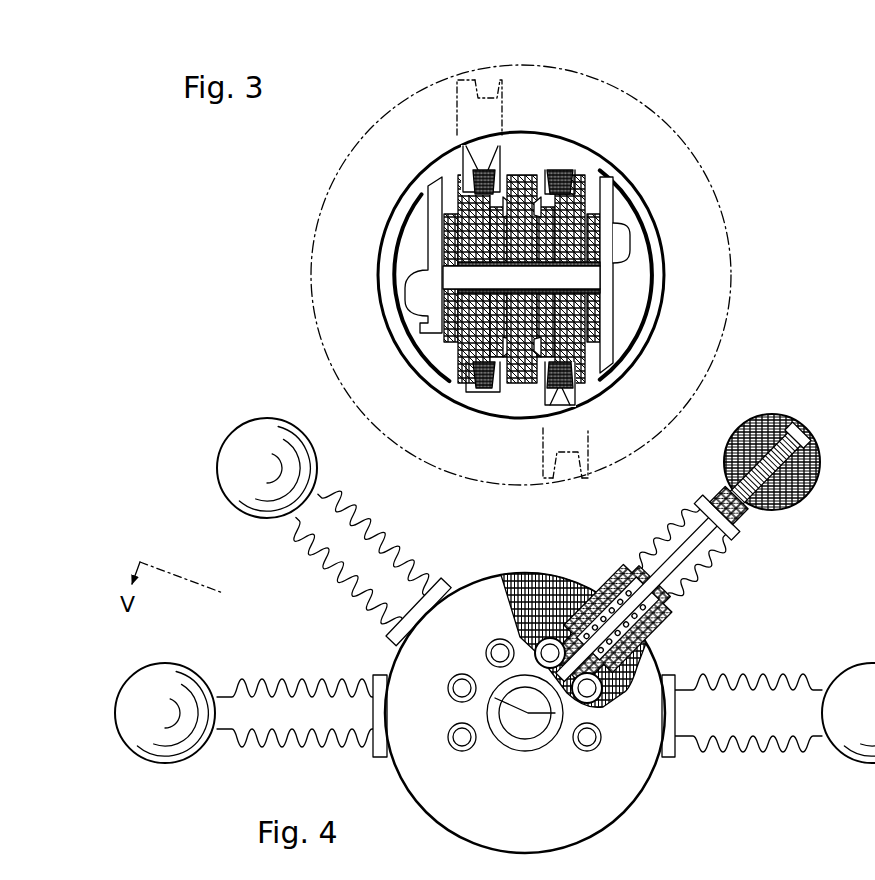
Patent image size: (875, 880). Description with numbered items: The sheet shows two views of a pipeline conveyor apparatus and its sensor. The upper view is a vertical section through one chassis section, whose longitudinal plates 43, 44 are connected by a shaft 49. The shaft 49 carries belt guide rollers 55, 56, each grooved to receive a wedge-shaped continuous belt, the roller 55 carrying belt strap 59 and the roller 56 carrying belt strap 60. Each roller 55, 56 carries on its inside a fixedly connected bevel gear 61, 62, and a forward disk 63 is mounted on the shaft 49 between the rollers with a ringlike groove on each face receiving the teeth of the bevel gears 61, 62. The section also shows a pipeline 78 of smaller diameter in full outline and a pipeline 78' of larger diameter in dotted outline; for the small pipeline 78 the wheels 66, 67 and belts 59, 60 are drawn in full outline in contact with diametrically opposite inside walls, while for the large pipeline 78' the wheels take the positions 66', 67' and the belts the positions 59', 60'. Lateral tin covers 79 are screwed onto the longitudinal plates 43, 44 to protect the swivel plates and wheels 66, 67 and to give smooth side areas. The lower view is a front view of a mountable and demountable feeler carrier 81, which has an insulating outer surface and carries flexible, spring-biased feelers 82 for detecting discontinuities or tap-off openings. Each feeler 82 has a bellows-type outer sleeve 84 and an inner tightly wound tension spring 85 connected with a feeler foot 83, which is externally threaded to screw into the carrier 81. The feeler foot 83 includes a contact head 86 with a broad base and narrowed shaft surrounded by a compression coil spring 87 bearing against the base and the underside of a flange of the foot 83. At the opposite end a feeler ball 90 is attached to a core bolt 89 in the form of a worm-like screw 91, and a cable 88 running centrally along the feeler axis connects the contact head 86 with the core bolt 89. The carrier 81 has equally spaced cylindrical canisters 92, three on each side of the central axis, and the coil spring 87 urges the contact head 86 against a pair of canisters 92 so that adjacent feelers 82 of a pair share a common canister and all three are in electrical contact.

In FIG. 3, the longitudinal plate 43 is at (450, 305).
In FIG. 3, the longitudinal plate 44 is at (595, 253).
In FIG. 3, the shaft 49 is at (473, 277).
In FIG. 3, the belt guide roller 55 is at (470, 201).
In FIG. 3, the belt guide roller 56 is at (593, 193).
In FIG. 3, the belt strap 59 is at (397, 251).
In FIG. 3, the belt strap position for large pipeline 59' is at (426, 84).
In FIG. 3, the belt strap 60 is at (617, 282).
In FIG. 3, the belt strap position for large pipeline 60' is at (583, 487).
In FIG. 3, the bevel gear 61 is at (495, 237).
In FIG. 3, the bevel gear 62 is at (605, 222).
In FIG. 3, the forward disk 63 is at (526, 370).
In FIG. 3, the wheel 66 is at (388, 265).
In FIG. 3, the wheel position for large pipeline 66' is at (411, 107).
In FIG. 3, the wheel 67 is at (621, 321).
In FIG. 3, the wheel position for large pipeline 67' is at (561, 475).
In FIG. 3, the pipeline 78 is at (588, 275).
In FIG. 3, the pipeline 78' is at (557, 275).
In FIG. 3, the lateral tin cover 79 is at (632, 223).
In FIG. 4, the feeler carrier 81 is at (633, 753).
In FIG. 4, the feeler 82 is at (661, 618).
In FIG. 4, the feeler foot 83 is at (617, 590).
In FIG. 4, the outer sleeve 84 is at (733, 540).
In FIG. 4, the tension spring 85 is at (712, 573).
In FIG. 4, the contact head 86 is at (545, 657).
In FIG. 4, the compression coil spring 87 is at (590, 620).
In FIG. 4, the cable 88 is at (643, 603).
In FIG. 4, the core bolt 89 is at (780, 490).
In FIG. 4, the feeler ball 90 is at (808, 438).
In FIG. 4, the worm-like screw 91 is at (800, 452).
In FIG. 4, the canister 92 is at (498, 640).